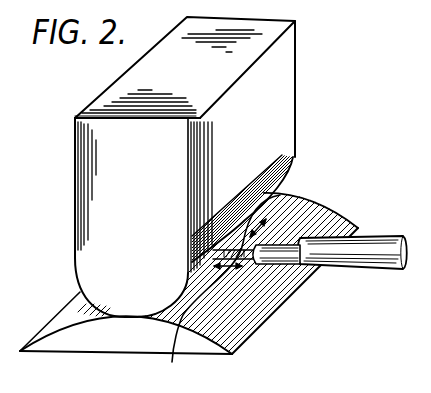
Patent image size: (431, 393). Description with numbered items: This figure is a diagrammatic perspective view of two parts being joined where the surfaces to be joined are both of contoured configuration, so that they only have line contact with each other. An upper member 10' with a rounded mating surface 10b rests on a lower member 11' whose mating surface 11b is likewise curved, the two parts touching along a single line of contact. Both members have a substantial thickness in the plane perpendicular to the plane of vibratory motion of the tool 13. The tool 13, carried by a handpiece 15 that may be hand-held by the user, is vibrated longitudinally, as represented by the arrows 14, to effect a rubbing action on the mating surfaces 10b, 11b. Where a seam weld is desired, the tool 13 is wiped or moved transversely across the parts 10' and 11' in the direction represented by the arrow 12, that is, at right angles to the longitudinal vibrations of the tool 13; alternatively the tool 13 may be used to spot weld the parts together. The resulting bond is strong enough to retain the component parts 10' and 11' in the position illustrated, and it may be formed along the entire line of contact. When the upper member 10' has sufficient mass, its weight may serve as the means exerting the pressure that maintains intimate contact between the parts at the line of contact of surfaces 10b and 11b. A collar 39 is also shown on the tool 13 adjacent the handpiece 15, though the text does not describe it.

The upper member 10' is at (161, 145).
The mating surface 10b is at (133, 316).
The lower member 11' is at (225, 269).
The mating surface 11b is at (122, 318).
The arrow 12 is at (293, 203).
The tool 13 is at (242, 250).
The arrows 14 is at (225, 291).
The handpiece 15 is at (383, 267).
The collar 39 is at (287, 258).